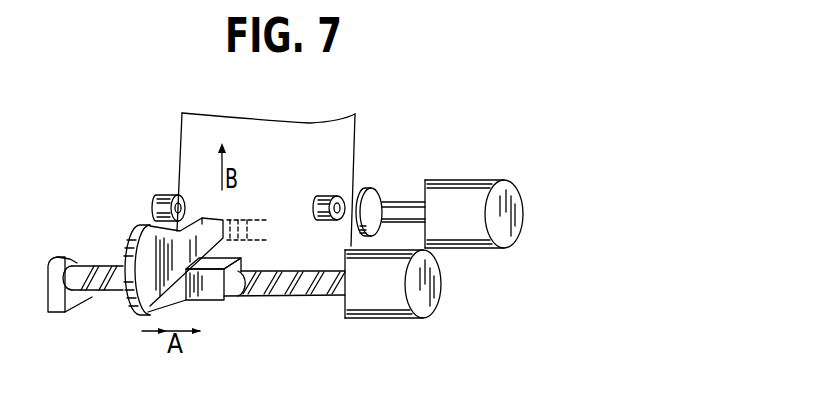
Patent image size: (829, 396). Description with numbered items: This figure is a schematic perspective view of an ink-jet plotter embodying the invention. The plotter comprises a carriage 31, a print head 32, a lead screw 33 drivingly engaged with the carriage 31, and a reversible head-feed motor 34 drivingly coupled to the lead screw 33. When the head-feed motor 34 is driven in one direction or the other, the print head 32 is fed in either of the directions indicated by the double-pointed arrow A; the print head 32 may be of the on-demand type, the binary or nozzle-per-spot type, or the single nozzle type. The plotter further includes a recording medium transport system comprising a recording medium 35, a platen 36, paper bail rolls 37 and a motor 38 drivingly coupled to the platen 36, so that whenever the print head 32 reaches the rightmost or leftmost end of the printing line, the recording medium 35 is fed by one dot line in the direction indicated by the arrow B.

The carriage 31 is at (214, 292).
The print head 32 is at (130, 240).
The lead screw 33 is at (283, 287).
The head-feed motor 34 is at (432, 282).
The recording medium 35 is at (355, 130).
The platen 36 is at (357, 191).
The paper bail rolls 37 is at (168, 193).
The motor 38 is at (473, 192).